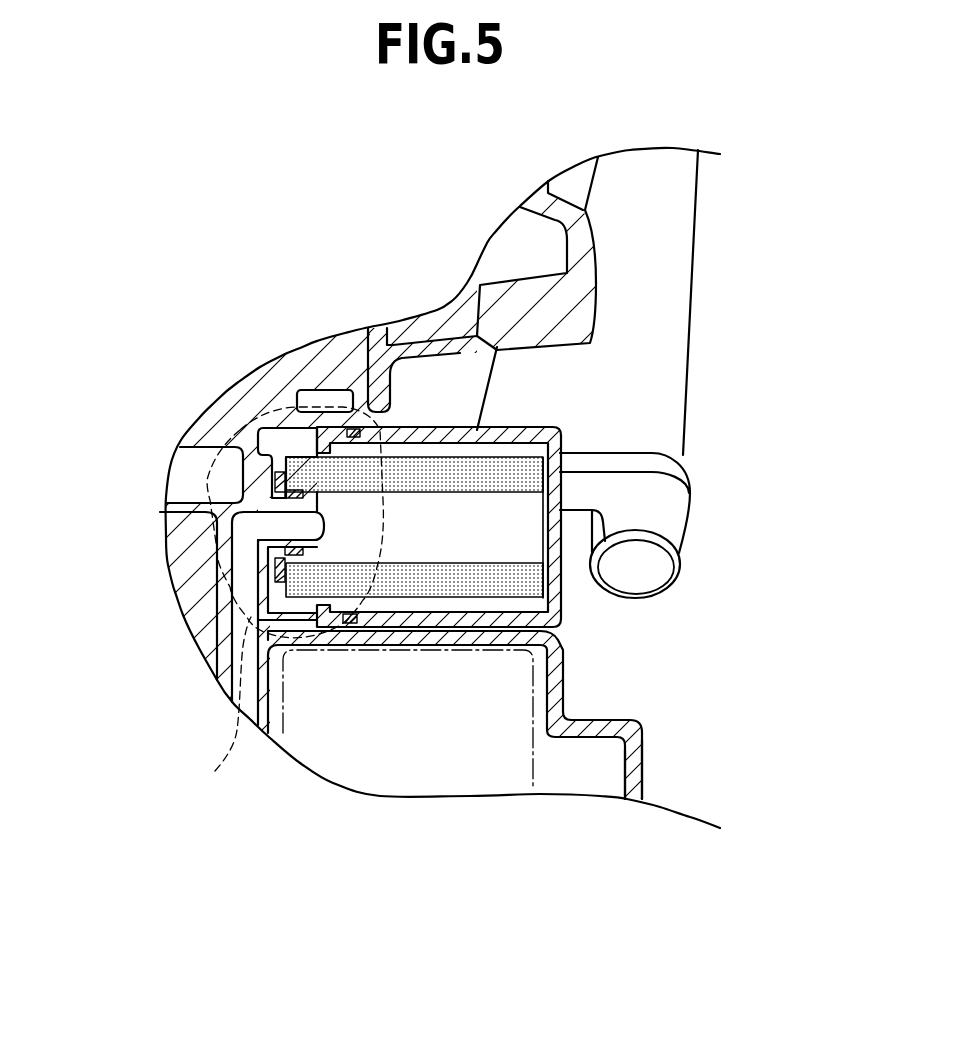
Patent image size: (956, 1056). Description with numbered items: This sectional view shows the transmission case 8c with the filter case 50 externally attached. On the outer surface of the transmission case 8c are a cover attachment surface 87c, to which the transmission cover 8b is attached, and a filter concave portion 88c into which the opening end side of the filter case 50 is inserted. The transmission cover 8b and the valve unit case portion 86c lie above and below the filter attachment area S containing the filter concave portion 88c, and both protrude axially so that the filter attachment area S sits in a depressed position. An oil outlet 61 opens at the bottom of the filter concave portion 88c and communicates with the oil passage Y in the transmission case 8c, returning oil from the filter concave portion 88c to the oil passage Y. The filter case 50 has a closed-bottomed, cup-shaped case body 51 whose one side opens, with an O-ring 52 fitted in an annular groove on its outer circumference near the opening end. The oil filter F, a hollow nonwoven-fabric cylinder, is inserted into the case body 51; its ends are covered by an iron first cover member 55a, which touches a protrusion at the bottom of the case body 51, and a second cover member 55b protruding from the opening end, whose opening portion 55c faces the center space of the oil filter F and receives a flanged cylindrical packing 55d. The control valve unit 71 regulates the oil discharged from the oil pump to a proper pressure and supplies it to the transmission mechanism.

The transmission case 8c is at (270, 373).
The transmission cover 8b is at (597, 278).
The cover attachment surface 87c is at (385, 347).
The filter concave portion 88c is at (280, 443).
The oil passage Y is at (317, 397).
The case body 51 is at (520, 430).
The filter case 50 is at (565, 527).
The first cover member 55a is at (550, 533).
The second cover member 55b is at (280, 587).
The opening portion 55c is at (267, 553).
The cylindrical packing 55d is at (273, 487).
The oil outlet 61 is at (300, 510).
The filter attachment area S is at (221, 705).
The O-ring 52 is at (352, 628).
The control valve unit 71 is at (473, 747).
The oil filter F is at (440, 643).
The valve unit case portion 86c is at (640, 767).